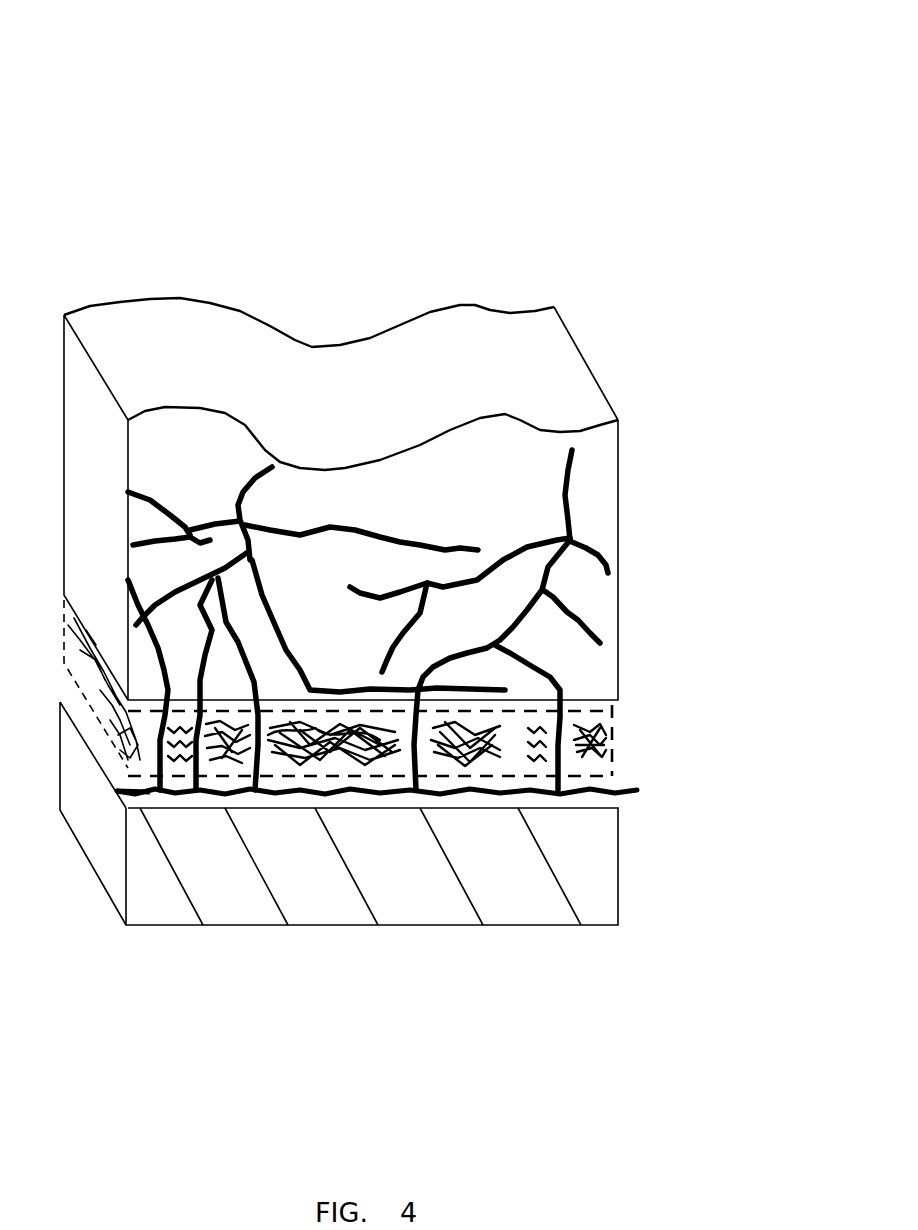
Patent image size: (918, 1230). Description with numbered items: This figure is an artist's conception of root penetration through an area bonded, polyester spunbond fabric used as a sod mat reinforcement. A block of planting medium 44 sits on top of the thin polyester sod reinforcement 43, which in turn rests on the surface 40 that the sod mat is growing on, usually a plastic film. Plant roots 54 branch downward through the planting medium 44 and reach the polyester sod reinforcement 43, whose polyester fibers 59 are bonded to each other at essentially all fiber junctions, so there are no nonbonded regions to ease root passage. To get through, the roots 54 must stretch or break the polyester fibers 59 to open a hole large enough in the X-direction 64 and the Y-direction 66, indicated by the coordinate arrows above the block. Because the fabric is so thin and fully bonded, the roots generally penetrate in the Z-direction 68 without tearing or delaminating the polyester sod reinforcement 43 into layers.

The surface the sod mat is growing on 40 is at (420, 925).
The polyester sod reinforcement 43 is at (613, 738).
The planting medium 44 is at (618, 469).
The seedling, plant plug, root division, or rooted cutting plant roots 54 is at (557, 568).
The polyester fibers 59 is at (122, 765).
The X-direction 64 is at (383, 200).
The Y-direction 66 is at (383, 200).
The Z-direction 68 is at (383, 200).